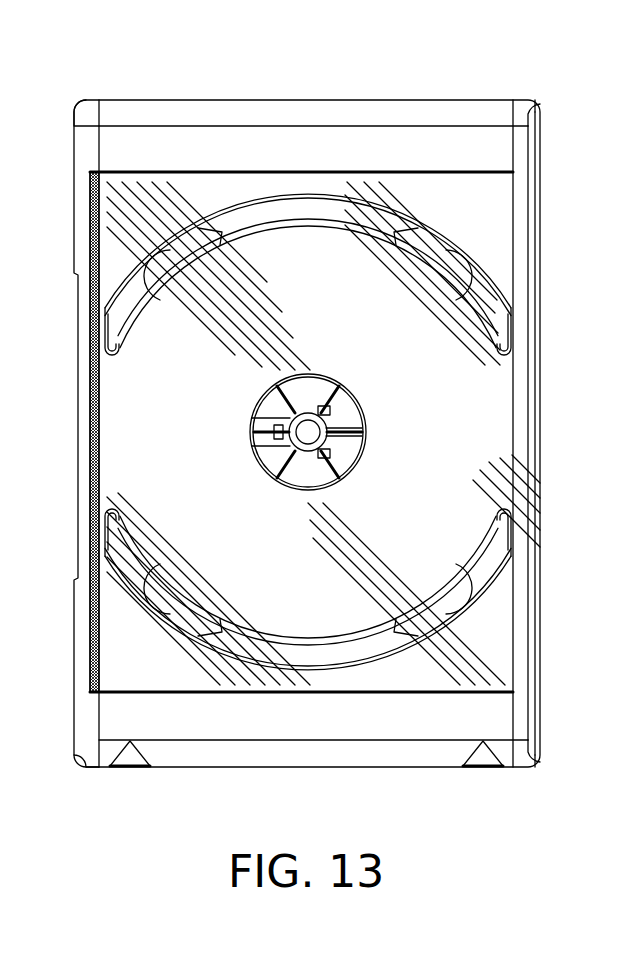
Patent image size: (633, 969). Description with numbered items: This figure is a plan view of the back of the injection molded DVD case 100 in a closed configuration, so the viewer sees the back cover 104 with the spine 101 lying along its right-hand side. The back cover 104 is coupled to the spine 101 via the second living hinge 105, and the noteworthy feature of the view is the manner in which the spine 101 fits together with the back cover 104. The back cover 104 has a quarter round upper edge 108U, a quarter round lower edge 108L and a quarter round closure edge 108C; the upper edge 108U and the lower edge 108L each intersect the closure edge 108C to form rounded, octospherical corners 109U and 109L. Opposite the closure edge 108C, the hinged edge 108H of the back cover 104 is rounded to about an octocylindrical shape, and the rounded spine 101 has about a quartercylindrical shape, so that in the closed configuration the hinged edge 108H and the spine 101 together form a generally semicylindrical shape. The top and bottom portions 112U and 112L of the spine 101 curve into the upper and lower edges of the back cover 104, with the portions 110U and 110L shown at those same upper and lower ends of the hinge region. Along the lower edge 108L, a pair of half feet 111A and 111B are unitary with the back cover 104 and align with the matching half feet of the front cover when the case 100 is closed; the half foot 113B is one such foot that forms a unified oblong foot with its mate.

The DVD case 100 is at (500, 62).
The spine 101 is at (535, 600).
The back cover 104 is at (330, 142).
The second living hinge 105 is at (516, 203).
The upper edge 108U is at (215, 113).
The lower edge 108L is at (303, 752).
The closure edge 108C is at (87, 158).
The hinged edge 108H is at (522, 284).
The octospherical corner 109U is at (88, 115).
The octospherical corner 109L is at (88, 752).
The upper hinge corner 110U is at (521, 110).
The lower hinge corner 110L is at (522, 752).
The half foot 111A is at (483, 757).
The half foot 111B is at (130, 757).
The top portion of the spine 112U is at (536, 114).
The bottom portion of the spine 112L is at (533, 760).
The half foot 113B is at (97, 411).